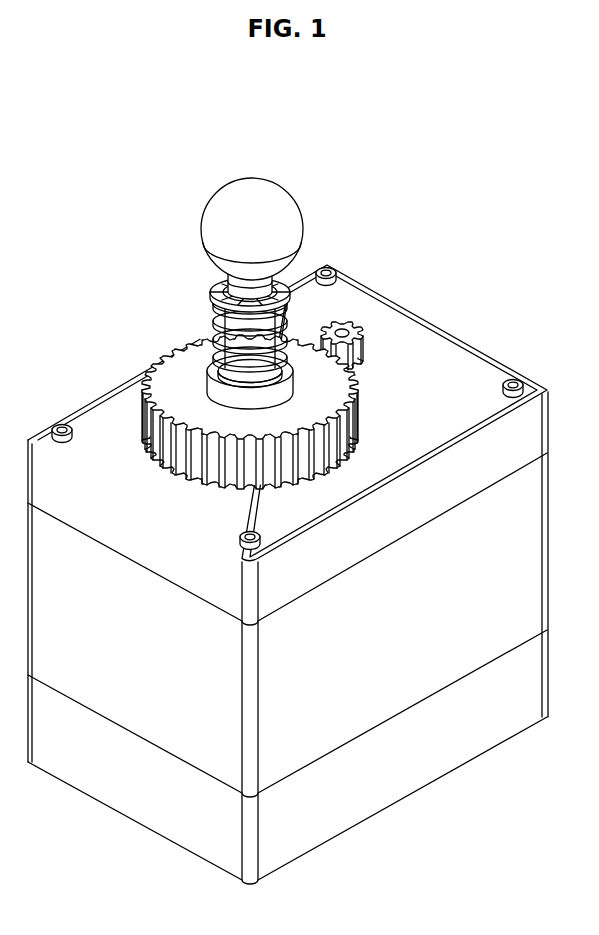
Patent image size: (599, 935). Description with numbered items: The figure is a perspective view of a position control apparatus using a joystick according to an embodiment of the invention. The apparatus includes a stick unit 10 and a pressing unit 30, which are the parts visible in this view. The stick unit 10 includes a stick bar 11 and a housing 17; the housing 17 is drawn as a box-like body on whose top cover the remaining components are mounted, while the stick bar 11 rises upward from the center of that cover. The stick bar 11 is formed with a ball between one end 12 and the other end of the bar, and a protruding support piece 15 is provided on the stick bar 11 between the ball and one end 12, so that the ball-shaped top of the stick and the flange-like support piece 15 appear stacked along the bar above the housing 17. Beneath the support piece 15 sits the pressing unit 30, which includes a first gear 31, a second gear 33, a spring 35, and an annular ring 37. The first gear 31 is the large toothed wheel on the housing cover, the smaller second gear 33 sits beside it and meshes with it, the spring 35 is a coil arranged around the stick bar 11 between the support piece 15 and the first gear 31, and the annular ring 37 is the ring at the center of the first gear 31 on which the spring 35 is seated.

The stick unit 10 is at (255, 194).
The stick bar 11 is at (313, 244).
The one end 12 is at (222, 222).
The protruding support piece 15 is at (214, 292).
The housing 17 is at (374, 310).
The pressing unit 30 is at (222, 389).
The first gear 31 is at (148, 372).
The second gear 33 is at (361, 337).
The spring 35 is at (212, 320).
The annular ring 37 is at (222, 400).